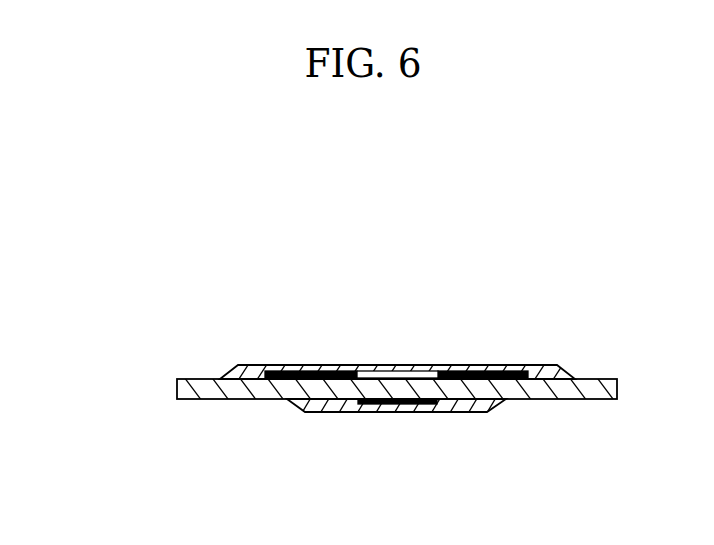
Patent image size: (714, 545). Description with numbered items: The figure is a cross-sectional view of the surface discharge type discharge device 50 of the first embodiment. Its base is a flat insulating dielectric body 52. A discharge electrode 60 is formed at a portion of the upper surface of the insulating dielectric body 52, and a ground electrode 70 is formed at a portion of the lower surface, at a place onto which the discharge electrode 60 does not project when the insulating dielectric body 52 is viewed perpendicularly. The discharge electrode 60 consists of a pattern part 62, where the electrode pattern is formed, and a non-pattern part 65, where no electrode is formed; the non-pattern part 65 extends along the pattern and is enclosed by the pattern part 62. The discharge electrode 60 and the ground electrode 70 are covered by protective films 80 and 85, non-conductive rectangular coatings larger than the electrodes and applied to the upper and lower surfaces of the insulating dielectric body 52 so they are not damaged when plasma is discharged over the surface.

The discharge device 50 is at (241, 330).
The insulating dielectric body 52 is at (176, 394).
The discharge electrode 60 is at (322, 282).
The pattern part 62 is at (292, 371).
The non-pattern part 65 is at (401, 374).
The ground electrode 70 is at (398, 403).
The protective film 80 is at (552, 372).
The protective film 85 is at (488, 408).